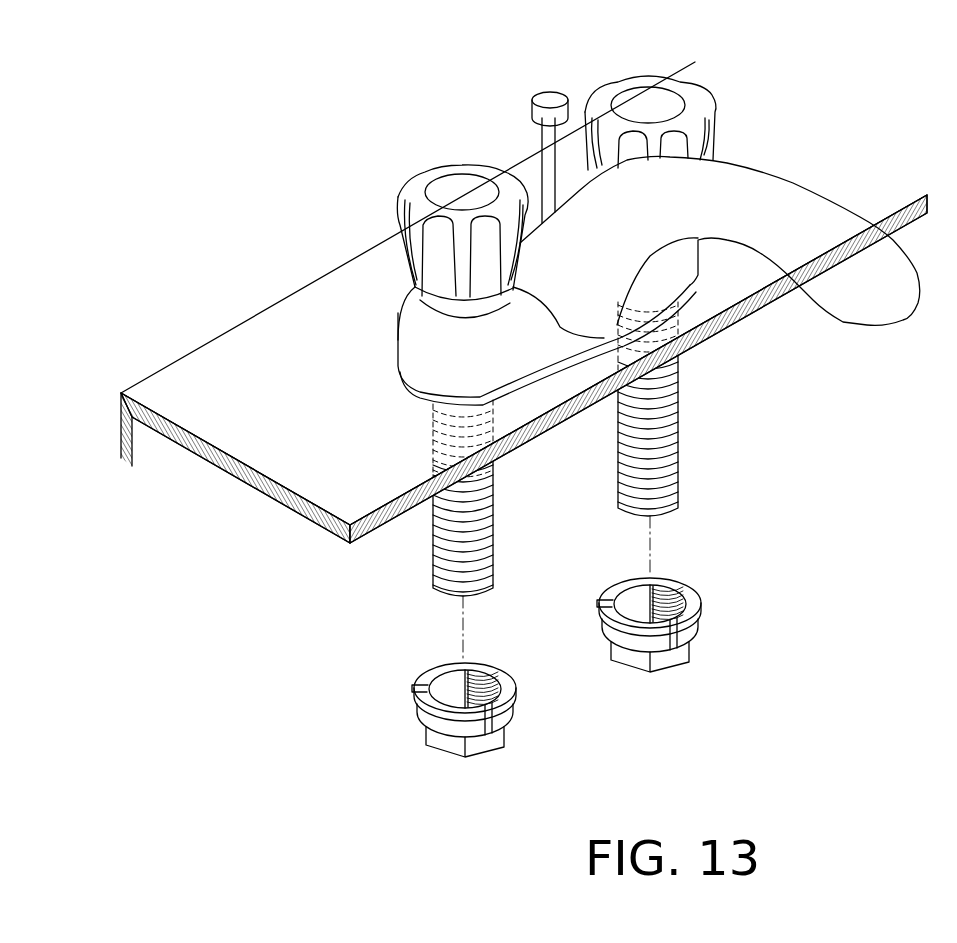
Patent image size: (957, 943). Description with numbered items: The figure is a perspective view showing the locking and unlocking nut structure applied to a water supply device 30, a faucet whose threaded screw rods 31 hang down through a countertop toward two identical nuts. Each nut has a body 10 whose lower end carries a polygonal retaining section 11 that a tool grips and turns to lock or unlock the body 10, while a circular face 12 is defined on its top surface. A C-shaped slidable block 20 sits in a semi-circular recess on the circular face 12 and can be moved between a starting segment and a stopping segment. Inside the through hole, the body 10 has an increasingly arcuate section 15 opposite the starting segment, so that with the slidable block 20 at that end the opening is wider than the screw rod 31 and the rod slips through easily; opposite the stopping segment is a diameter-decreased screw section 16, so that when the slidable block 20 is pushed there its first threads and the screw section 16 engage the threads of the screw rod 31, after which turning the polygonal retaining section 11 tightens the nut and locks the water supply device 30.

The body 10 is at (423, 727).
The polygonal retaining section 11 is at (483, 748).
The circular face 12 is at (416, 678).
The arcuate section 15 is at (455, 672).
The diameter-decreased screw section 16 is at (480, 676).
The slidable block 20 is at (513, 703).
The water supply device 30 is at (760, 168).
The screw rod 31 is at (432, 532).